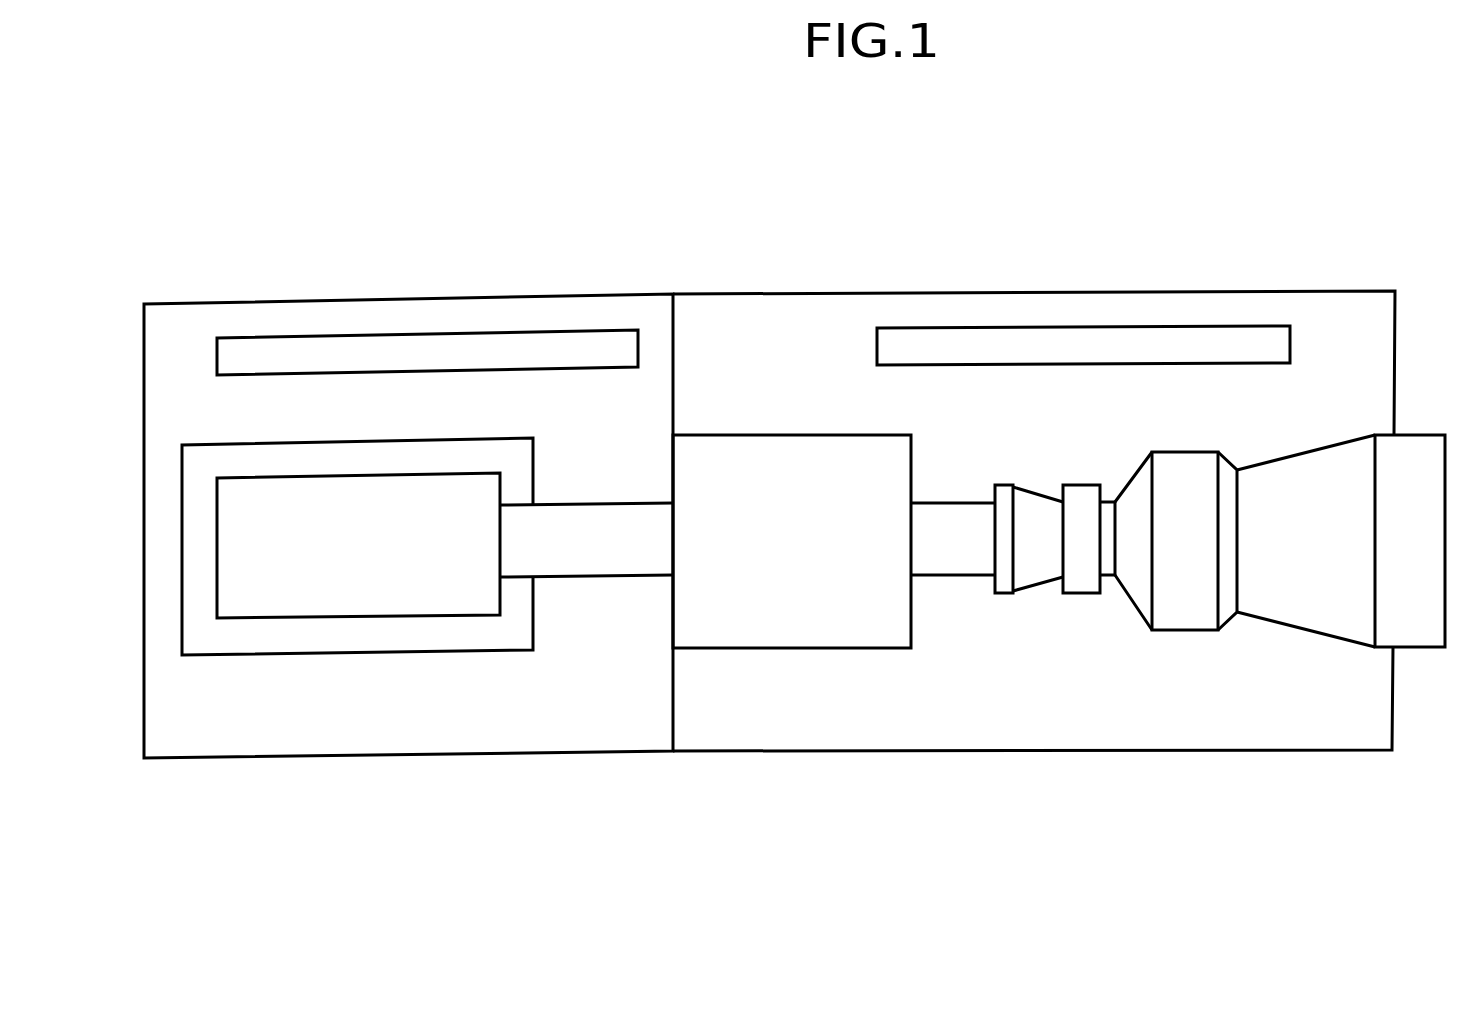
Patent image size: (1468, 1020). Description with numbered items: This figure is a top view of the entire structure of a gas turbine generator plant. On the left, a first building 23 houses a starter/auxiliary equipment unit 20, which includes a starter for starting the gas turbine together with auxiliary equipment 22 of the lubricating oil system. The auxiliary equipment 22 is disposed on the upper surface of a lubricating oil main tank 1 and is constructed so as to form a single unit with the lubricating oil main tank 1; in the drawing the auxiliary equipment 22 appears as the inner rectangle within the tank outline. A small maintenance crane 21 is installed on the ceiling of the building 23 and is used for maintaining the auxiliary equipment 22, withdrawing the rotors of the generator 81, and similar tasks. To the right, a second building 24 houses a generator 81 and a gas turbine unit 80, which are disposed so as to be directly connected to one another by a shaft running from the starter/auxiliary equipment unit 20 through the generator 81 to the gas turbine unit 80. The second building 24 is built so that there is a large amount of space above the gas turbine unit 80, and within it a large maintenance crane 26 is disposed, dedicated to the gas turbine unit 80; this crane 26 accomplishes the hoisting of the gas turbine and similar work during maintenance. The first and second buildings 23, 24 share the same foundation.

The lubricating oil main tank 1 is at (535, 628).
The starter/auxiliary equipment unit 20 is at (593, 675).
The maintenance crane 21 is at (253, 352).
The auxiliary equipment 22 is at (378, 618).
The building 23 is at (190, 303).
The building 24 is at (710, 293).
The maintenance crane 26 is at (1097, 328).
The gas turbine unit 80 is at (1152, 630).
The generator 81 is at (797, 435).